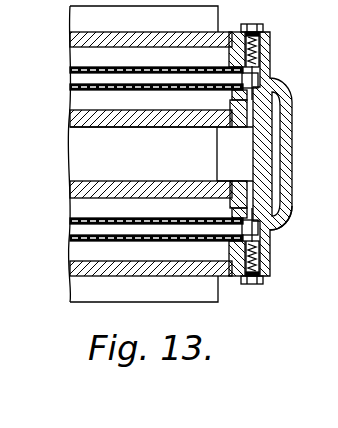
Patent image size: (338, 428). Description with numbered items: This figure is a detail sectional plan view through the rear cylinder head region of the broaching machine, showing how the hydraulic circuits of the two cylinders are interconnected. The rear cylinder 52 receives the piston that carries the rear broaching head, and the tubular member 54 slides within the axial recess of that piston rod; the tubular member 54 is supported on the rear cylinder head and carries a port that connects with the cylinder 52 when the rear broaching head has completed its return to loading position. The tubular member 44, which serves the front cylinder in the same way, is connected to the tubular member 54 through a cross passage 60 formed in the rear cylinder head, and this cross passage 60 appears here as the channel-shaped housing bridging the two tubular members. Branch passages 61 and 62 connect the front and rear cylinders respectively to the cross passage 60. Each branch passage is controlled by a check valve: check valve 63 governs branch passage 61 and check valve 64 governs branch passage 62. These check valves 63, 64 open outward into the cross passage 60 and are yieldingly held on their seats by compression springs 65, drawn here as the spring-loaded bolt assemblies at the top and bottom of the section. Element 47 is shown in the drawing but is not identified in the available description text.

The tubular member 44 is at (80, 230).
The lower cylinder body 47 is at (150, 197).
The rear cylinder 52 is at (168, 47).
The tubular member 54 is at (80, 78).
The cross passage 60 is at (273, 145).
The branch passage 61 is at (242, 208).
The branch passage 62 is at (242, 100).
The check valve 63 is at (273, 233).
The check valve 64 is at (256, 80).
The compression spring 65 is at (262, 45).